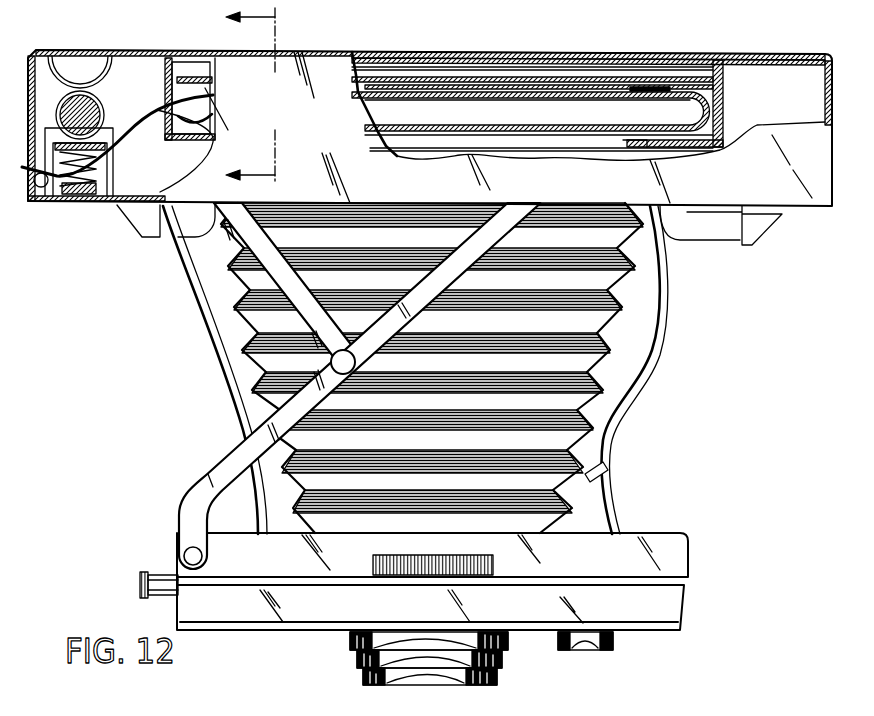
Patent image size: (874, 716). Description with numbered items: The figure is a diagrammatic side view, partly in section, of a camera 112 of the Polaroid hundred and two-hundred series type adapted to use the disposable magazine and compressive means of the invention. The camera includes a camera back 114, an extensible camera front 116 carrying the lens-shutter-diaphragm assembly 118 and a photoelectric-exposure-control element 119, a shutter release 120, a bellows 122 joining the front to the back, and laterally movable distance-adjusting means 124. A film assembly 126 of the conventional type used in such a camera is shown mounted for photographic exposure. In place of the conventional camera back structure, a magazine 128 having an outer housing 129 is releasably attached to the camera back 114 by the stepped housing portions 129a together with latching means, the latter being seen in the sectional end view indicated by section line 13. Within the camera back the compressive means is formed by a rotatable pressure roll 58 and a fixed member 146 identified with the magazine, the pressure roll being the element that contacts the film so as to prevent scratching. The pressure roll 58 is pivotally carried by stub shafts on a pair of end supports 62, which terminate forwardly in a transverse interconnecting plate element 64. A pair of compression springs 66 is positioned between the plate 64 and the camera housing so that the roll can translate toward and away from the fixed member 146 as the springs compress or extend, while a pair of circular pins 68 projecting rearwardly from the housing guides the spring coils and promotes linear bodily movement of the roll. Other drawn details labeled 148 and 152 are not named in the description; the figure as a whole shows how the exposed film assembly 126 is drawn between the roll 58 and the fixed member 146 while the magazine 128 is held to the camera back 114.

The section line 13- 13 is at (231, 98).
The pressure roll 58 is at (96, 98).
The end supports 62 is at (101, 112).
The plate element 64 is at (84, 140).
The compression springs 66 is at (95, 170).
The circular pins 68 is at (94, 186).
The camera 112 is at (440, 370).
The camera back 114 is at (328, 142).
The extensible camera front 116 is at (686, 605).
The lens-shutter-diaphragm assembly 118 is at (496, 673).
The photoelectric-exposure-control element 119 is at (615, 642).
The shutter release 120 is at (141, 582).
The bellows 122 is at (640, 303).
The distance-adjusting means 124 is at (136, 214).
The film assembly 126 is at (556, 97).
The magazine 128 is at (437, 53).
The outer housing 129 is at (520, 54).
The stepped housing portions 129a is at (826, 92).
The fixed member 146 is at (118, 54).
The partition wall 148 is at (724, 117).
The pressure plate 152 is at (633, 68).